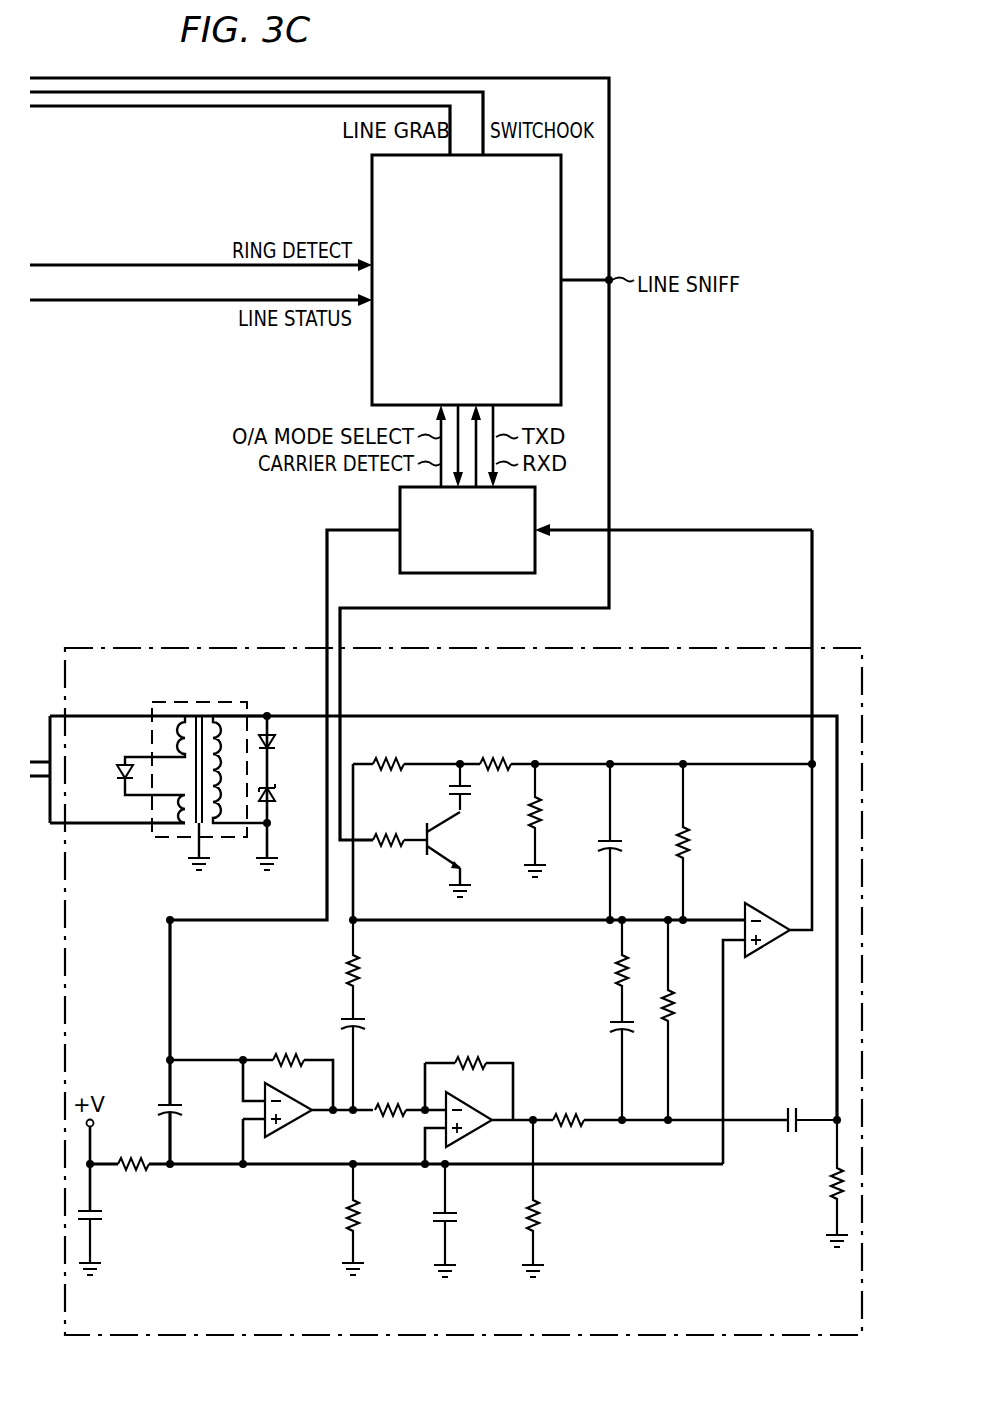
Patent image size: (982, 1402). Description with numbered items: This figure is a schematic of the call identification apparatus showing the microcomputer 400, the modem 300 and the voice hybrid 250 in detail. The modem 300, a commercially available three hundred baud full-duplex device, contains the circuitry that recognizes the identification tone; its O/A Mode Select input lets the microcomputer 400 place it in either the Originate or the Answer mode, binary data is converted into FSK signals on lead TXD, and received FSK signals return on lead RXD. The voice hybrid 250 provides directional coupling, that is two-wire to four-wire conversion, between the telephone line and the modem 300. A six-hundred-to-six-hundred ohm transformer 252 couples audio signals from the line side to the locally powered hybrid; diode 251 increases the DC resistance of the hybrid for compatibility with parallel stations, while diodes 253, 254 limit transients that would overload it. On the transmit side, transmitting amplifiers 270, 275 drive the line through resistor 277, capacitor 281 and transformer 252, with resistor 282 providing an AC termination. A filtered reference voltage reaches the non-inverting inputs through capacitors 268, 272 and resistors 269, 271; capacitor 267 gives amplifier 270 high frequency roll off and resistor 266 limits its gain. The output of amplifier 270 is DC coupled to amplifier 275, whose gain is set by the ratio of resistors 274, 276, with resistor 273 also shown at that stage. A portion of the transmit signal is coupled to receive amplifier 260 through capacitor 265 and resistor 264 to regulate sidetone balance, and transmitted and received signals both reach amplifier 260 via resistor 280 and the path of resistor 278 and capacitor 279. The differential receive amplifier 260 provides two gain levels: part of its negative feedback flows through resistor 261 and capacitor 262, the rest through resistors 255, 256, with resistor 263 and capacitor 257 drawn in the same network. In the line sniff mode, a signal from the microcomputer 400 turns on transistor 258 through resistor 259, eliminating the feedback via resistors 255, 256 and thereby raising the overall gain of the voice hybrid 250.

The microcomputer 400 is at (372, 193).
The modem 300 is at (400, 555).
The voice hybrid 250 is at (476, 649).
The diode 251 is at (105, 772).
The transformer 252 is at (204, 704).
The diode 253 is at (292, 748).
The diode 254 is at (292, 796).
The resistor 255 is at (394, 749).
The resistor 256 is at (500, 748).
The capacitor 257 is at (486, 787).
The transistor 258 is at (461, 854).
The resistor 259 is at (400, 825).
The receive amplifier 260 is at (767, 964).
The resistor 261 is at (707, 842).
The capacitor 262 is at (629, 842).
The resistor 263 is at (557, 820).
The resistor 264 is at (377, 969).
The capacitor 265 is at (377, 1064).
The resistor 266 is at (294, 1047).
The capacitor 267 is at (194, 1114).
The capacitor 268 is at (116, 1241).
The resistor 269 is at (138, 1148).
The transmitting amplifier 270 is at (319, 1118).
The resistor 271 is at (376, 1219).
The capacitor 272 is at (469, 1220).
The resistor 273 is at (555, 1198).
The resistor 274 is at (408, 1096).
The transmitting amplifier 275 is at (499, 1122).
The resistor 276 is at (475, 1050).
The resistor 277 is at (670, 1105).
The resistor 278 is at (598, 971).
The capacitor 279 is at (601, 1069).
The resistor 280 is at (693, 1020).
The capacitor 281 is at (806, 1106).
The resistor 282 is at (819, 1183).